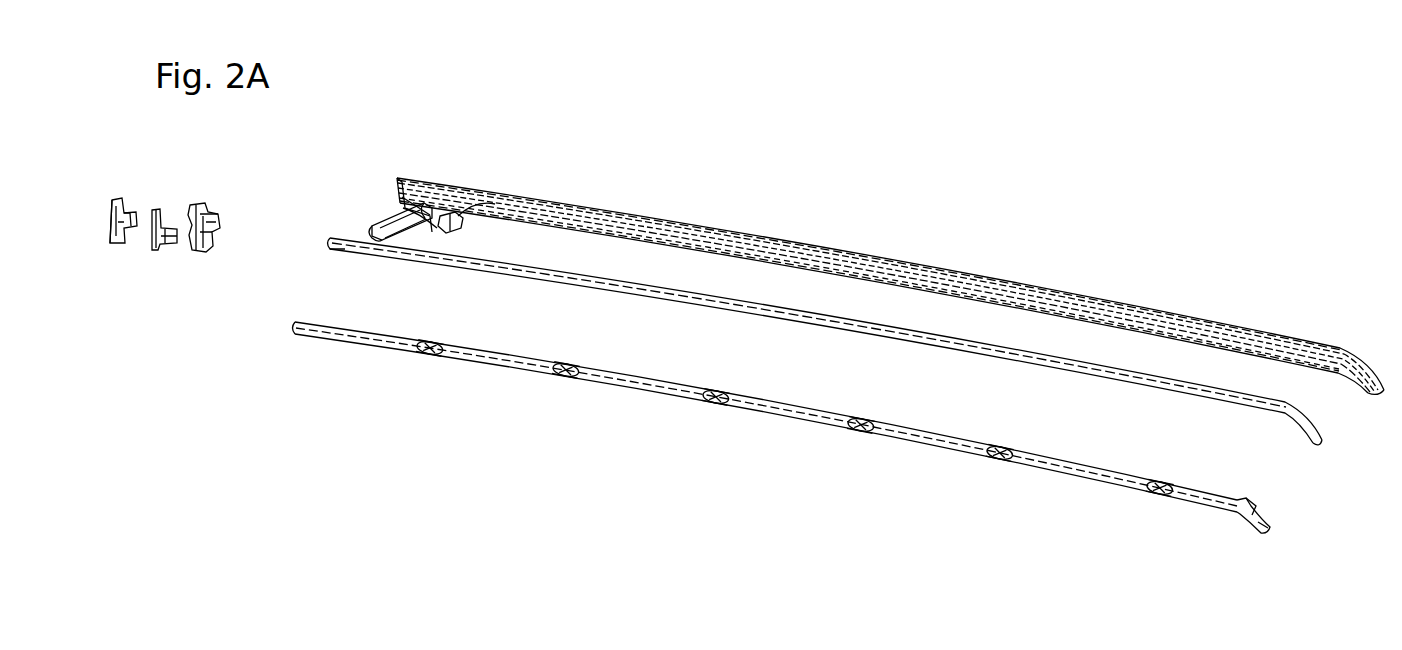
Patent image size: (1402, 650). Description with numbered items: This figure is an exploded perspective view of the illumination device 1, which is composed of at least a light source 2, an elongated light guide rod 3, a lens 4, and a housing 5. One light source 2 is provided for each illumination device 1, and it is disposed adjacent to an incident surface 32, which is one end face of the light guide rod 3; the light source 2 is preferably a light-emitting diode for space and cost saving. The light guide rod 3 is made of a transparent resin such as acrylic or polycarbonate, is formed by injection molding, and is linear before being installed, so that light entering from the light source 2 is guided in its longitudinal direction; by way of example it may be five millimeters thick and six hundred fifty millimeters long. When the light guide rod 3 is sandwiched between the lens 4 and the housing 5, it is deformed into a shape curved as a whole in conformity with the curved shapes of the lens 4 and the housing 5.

The illumination device 1 is at (1224, 228).
The light source 2 is at (161, 256).
The light guide rod 3 is at (998, 350).
The incident surface 32 is at (330, 243).
The lens 4 is at (833, 248).
The housing 5 is at (1095, 473).